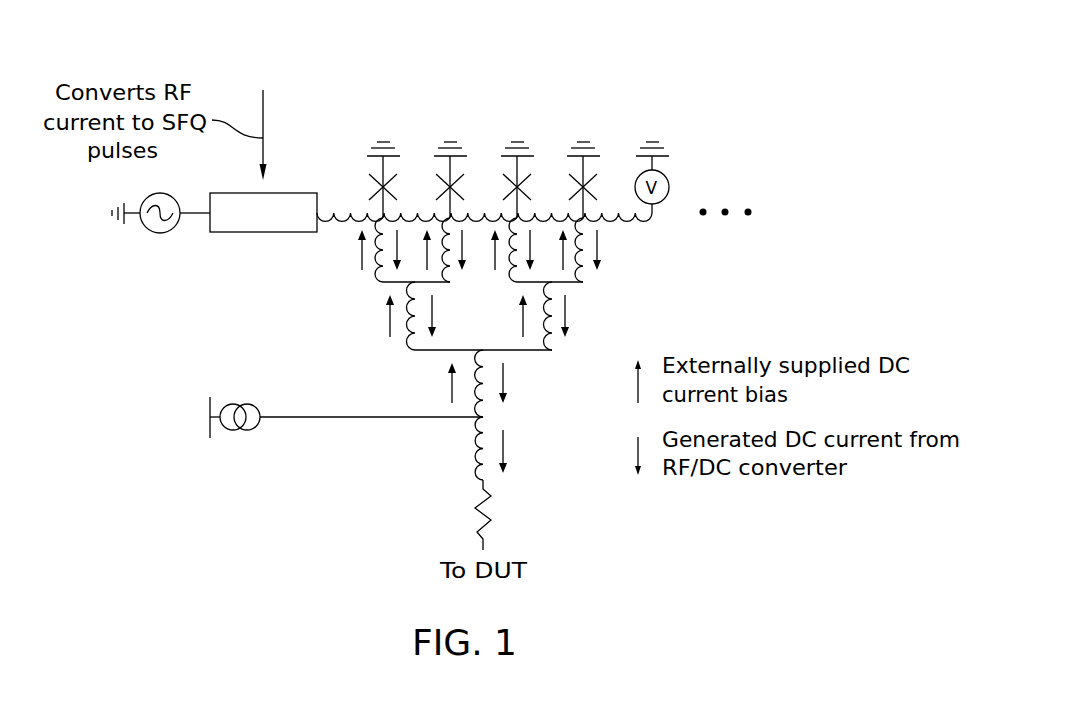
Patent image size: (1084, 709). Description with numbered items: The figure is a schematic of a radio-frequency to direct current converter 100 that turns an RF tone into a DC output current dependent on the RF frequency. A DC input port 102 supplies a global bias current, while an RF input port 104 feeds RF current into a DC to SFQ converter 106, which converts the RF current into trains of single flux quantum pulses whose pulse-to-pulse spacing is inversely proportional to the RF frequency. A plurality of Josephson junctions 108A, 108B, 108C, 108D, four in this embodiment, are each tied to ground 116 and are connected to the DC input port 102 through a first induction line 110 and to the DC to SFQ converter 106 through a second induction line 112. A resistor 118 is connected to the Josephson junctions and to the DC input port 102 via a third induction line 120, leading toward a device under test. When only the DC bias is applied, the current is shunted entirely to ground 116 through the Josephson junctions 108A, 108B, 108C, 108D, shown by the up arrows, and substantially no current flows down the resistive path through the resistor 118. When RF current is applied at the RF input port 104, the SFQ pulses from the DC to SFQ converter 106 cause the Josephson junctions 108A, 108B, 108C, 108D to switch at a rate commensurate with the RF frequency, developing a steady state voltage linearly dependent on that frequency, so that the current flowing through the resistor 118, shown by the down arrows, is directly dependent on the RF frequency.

The radio-frequency to direct current converter 100 is at (720, 57).
The DC input port 102 is at (262, 419).
The RF input port 104 is at (206, 214).
The DC to SFQ converter 106 is at (275, 232).
The Josephson junction 108A is at (395, 177).
The Josephson junction 108B is at (463, 177).
The Josephson junction 108C is at (530, 177).
The Josephson junction 108D is at (598, 177).
The first induction line 110 is at (353, 289).
The second induction line 112 is at (352, 210).
The ground 116 is at (383, 140).
The resistor 118 is at (490, 510).
The third induction line 120 is at (473, 450).